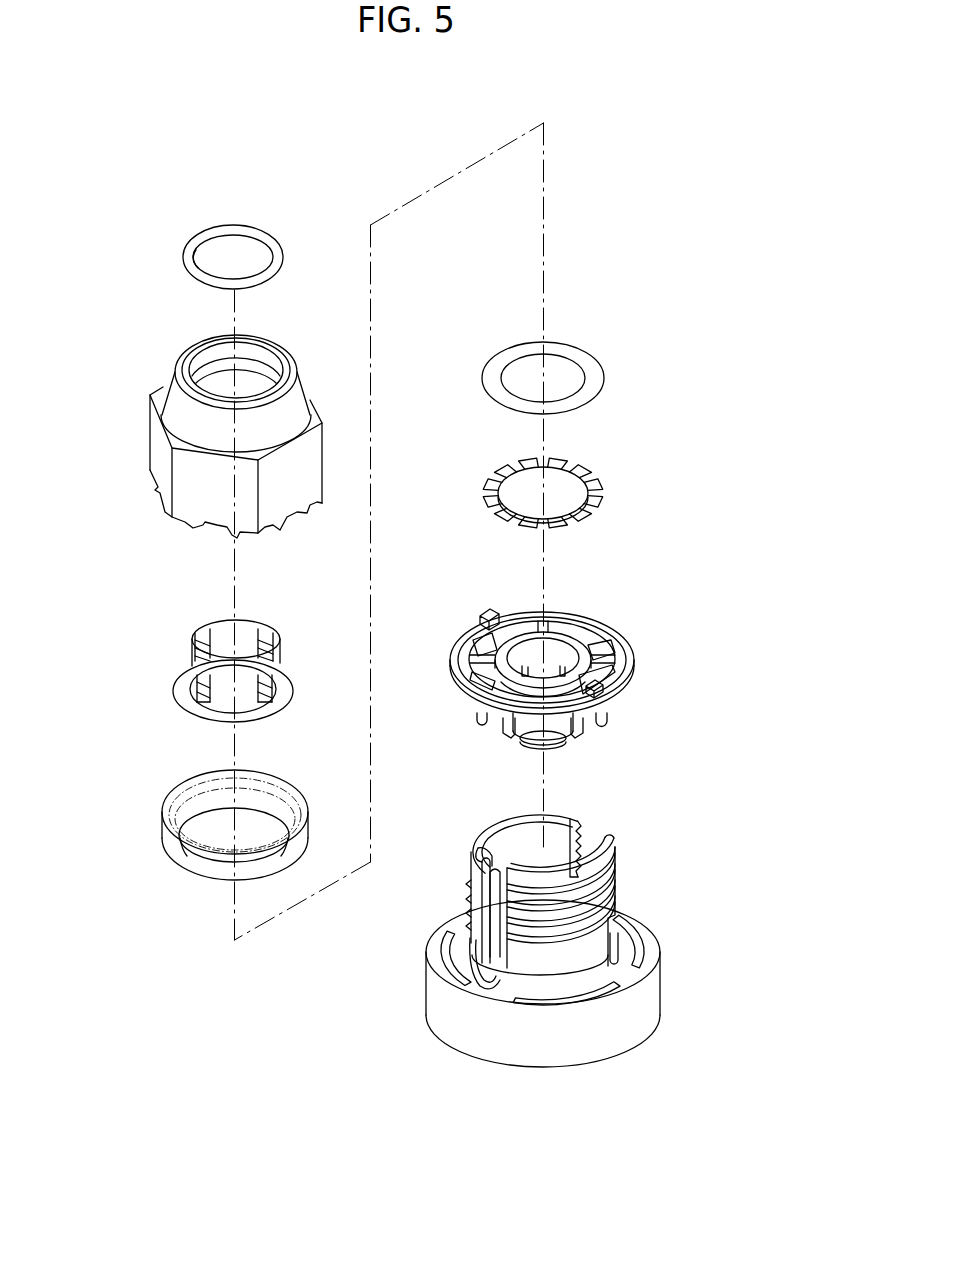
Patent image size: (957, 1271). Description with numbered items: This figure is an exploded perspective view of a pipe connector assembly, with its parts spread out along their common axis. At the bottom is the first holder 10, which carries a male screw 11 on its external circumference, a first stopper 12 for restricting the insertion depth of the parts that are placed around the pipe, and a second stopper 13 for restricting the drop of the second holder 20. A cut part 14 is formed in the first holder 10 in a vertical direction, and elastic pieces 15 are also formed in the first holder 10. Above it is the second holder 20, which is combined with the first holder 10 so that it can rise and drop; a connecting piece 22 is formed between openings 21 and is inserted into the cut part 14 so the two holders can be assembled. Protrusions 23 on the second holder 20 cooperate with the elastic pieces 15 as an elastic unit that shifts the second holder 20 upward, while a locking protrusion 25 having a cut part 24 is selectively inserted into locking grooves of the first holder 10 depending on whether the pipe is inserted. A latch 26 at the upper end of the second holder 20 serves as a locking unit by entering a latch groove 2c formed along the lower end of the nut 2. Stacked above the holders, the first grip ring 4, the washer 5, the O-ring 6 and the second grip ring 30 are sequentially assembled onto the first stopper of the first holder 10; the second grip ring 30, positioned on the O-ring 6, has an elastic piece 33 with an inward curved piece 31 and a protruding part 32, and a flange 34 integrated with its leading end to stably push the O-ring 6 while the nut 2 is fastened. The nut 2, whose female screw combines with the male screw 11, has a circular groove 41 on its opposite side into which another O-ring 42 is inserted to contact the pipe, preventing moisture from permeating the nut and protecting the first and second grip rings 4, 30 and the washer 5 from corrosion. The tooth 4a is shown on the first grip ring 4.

The nut 2 is at (178, 413).
The latch groove 2c is at (152, 488).
The first grip ring 4 is at (583, 484).
The tooth of lock washer 4a is at (598, 475).
The washer 5 is at (598, 384).
The O-ring 6 is at (172, 797).
The first holder 10 is at (549, 937).
The male screw 11 is at (470, 876).
The first stopper 12 is at (500, 872).
The second stopper 13 is at (470, 953).
The cut part 14 is at (587, 838).
The elastic pieces 15 is at (477, 983).
The second holder 20 is at (587, 676).
The openings 21 is at (580, 604).
The connecting piece 22 is at (487, 612).
The protrusions 23 is at (607, 720).
The cut part 24 is at (513, 738).
The locking protrusion 25 is at (520, 760).
The latch 26 is at (650, 650).
The second grip ring 30 is at (180, 653).
The inward curved piece 31 is at (183, 672).
The protruding part 32 is at (196, 648).
The elastic piece 33 is at (195, 633).
The flange 34 is at (178, 703).
The circular groove 41 is at (207, 346).
The O-ring 42 is at (186, 252).